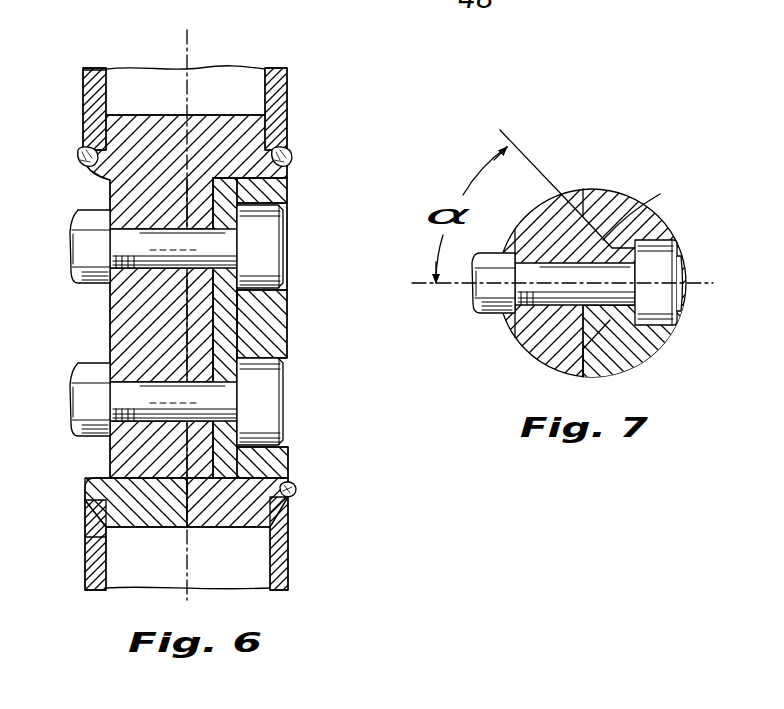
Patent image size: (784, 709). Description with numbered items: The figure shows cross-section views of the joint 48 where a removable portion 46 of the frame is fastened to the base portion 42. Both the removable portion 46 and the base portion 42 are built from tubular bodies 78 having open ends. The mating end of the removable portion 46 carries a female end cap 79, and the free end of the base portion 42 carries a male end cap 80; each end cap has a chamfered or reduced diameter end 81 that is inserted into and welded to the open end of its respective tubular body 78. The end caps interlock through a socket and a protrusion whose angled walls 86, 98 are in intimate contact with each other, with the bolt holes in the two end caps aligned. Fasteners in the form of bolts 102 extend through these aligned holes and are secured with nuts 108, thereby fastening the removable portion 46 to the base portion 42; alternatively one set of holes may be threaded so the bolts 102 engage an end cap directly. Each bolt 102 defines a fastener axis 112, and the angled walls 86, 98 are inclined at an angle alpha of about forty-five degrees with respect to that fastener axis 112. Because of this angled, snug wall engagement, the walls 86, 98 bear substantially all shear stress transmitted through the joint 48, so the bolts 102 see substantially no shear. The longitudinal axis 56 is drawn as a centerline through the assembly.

In FIG. 6, the base portion 42 is at (76, 71).
In FIG. 6, the removable portion 46 is at (75, 535).
In FIG. 6, the joint 48 is at (312, 214).
In FIG. 7, the joint 48 is at (672, 349).
In FIG. 6, the longitudinal axis 56 is at (188, 37).
In FIG. 6, the tubular body 78 is at (277, 85).
In FIG. 6, the female end cap 79 is at (100, 182).
In FIG. 6, the male end cap 80 is at (273, 463).
In FIG. 6, the reduced diameter end 81 is at (252, 128).
In FIG. 7, the angled wall 86 is at (665, 191).
In FIG. 7, the angled wall 98 is at (607, 232).
In FIG. 6, the bolt 102 is at (128, 373).
In FIG. 7, the bolt 102 is at (515, 337).
In FIG. 6, the nut 108 is at (82, 280).
In FIG. 7, the fastener axis 112 is at (712, 283).